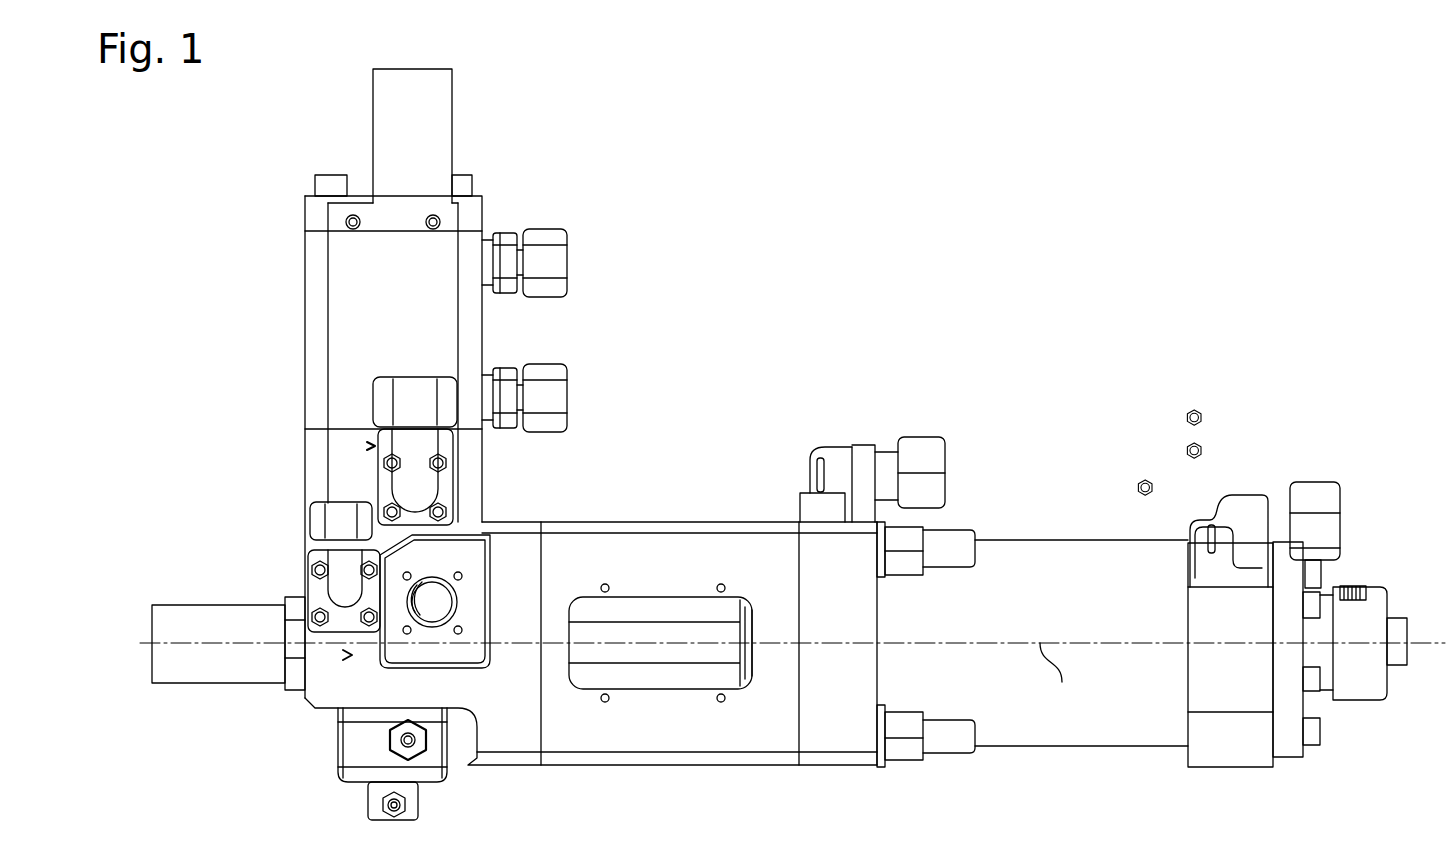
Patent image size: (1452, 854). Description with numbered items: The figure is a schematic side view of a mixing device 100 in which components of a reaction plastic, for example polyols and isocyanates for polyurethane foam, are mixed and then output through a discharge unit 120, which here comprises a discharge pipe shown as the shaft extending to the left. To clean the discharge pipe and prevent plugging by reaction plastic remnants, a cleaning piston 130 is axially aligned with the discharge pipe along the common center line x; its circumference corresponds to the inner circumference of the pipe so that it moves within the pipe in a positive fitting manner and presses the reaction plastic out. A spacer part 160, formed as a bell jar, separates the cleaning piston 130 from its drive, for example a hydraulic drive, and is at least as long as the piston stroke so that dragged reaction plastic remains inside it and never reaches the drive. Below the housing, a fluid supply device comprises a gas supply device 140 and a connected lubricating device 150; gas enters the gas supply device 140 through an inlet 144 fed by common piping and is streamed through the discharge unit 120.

The mixing device 100 is at (1000, 142).
The discharge unit 120 is at (213, 620).
The cleaning piston 130 is at (627, 630).
The gas supply device 140 is at (362, 760).
The inlet 144 is at (393, 740).
The lubricating device 150 is at (435, 758).
The spacer part 160 is at (745, 737).